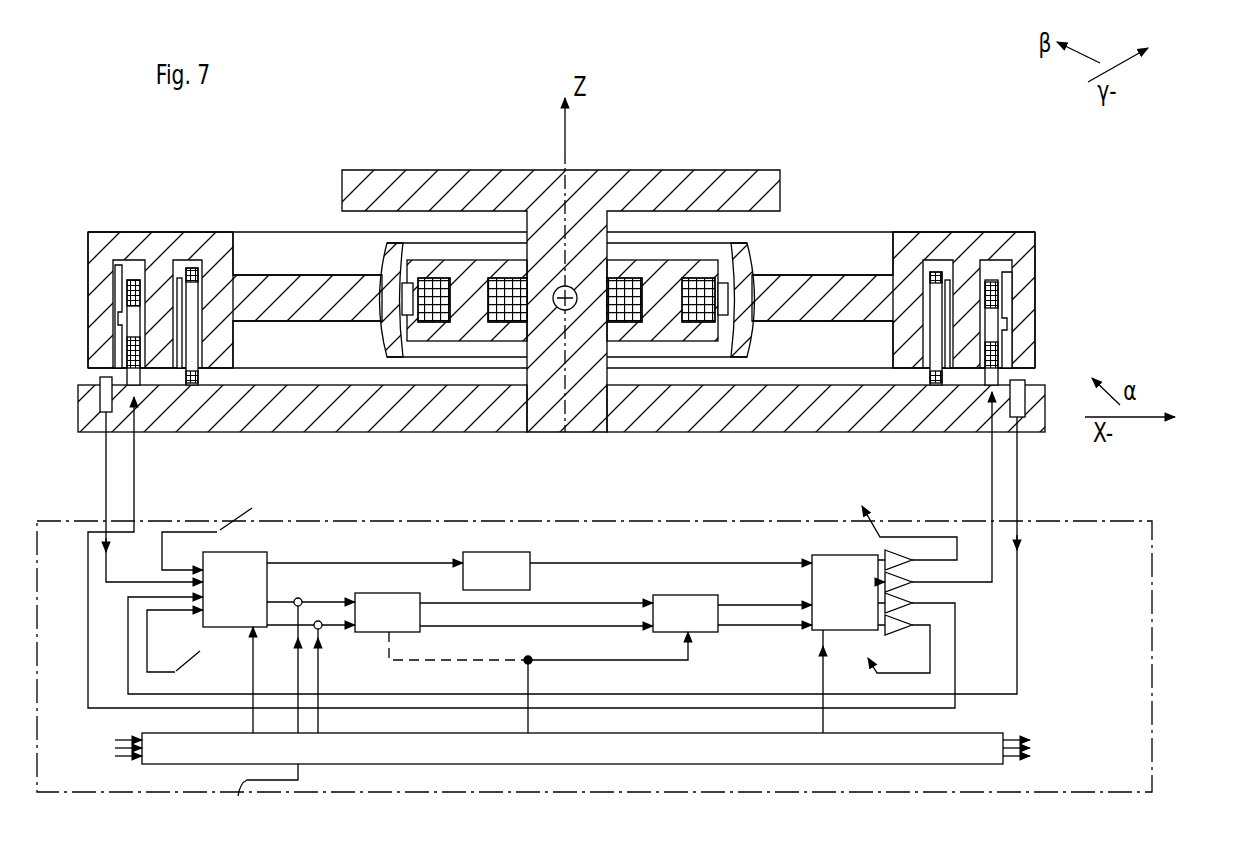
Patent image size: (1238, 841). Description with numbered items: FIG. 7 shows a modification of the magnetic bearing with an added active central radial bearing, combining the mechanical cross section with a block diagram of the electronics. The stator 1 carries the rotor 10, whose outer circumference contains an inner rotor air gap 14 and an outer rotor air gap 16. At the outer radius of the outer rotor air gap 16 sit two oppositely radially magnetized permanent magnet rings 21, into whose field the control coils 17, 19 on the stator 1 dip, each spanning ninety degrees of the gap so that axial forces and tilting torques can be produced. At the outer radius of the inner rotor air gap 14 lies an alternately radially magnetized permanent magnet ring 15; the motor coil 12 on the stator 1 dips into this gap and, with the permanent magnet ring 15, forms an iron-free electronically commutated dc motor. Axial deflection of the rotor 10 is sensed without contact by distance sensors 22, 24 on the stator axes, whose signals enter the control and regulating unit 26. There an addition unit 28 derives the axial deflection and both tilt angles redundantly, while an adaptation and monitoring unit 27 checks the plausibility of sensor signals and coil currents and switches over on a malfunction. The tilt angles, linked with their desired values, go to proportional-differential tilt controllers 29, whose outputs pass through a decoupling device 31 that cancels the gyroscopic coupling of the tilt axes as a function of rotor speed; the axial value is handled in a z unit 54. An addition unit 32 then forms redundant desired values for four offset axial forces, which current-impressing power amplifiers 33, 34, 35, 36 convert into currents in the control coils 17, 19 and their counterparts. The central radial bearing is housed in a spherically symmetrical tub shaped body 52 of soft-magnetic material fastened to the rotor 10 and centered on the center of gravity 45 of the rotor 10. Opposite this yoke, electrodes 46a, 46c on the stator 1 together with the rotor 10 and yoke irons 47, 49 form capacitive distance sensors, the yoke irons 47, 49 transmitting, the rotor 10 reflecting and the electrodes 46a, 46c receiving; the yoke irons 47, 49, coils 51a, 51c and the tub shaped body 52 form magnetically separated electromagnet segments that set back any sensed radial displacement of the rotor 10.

The stator 1 is at (533, 166).
The rotor 10 is at (815, 270).
The motor coil 12 is at (204, 287).
The inner rotor air gap 14 is at (192, 266).
The permanent magnet ring 15 is at (180, 278).
The outer rotor air gap 16 is at (133, 280).
The control coil 17 is at (1013, 270).
The control coil 19 is at (119, 263).
The permanent magnet rings 21 is at (116, 335).
The distance sensor 22 is at (1025, 385).
The distance sensor 24 is at (100, 385).
The control and regulating unit 26 is at (1158, 568).
The adaptation and monitoring unit 27 is at (998, 734).
The addition unit 28 is at (258, 554).
The tilt controllers 29 is at (387, 593).
The decoupling device 31 is at (712, 595).
The addition unit 32 is at (826, 570).
The power amplifier 33 is at (957, 548).
The power amplifier 34 is at (884, 583).
The power amplifier 35 is at (957, 603).
The power amplifier 36 is at (932, 627).
The center of gravity 45 is at (569, 290).
The electrode 46a is at (724, 285).
The electrode 46c is at (403, 287).
The yoke iron 47 is at (664, 268).
The yoke iron 49 is at (467, 265).
The coil 51a is at (702, 318).
The coil 51c is at (497, 320).
The tub shaped body 52 is at (386, 333).
The z unit 54 is at (526, 556).